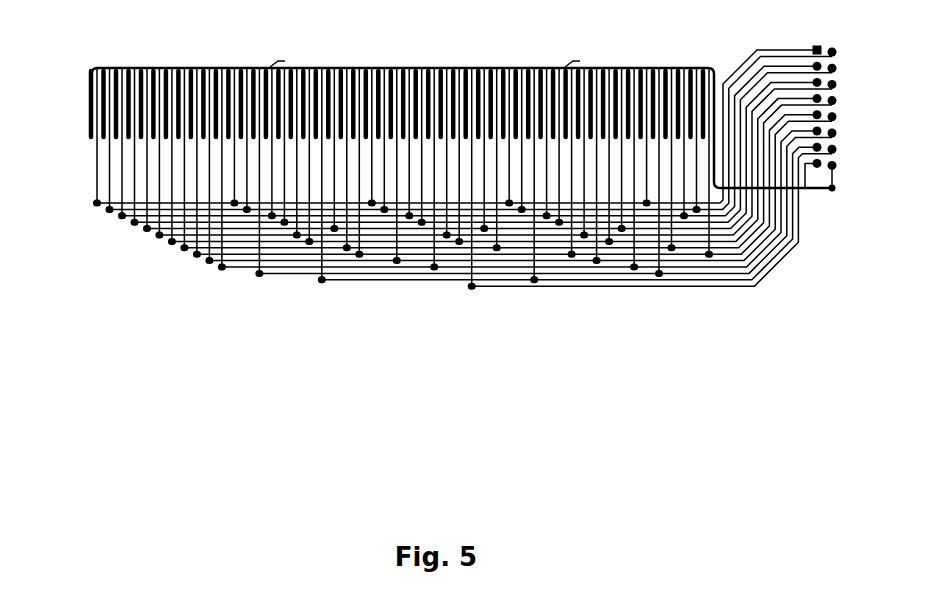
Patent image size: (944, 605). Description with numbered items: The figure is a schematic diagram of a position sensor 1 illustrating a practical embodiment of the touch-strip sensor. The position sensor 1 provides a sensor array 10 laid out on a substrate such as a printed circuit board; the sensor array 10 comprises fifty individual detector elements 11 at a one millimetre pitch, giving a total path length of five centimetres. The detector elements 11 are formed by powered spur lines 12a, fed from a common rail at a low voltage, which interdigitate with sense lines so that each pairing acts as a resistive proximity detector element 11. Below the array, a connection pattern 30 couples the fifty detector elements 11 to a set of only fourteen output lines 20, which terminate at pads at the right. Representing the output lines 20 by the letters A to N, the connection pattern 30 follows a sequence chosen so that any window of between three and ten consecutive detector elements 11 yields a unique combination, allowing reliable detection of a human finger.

The position sensor 1 is at (162, 281).
The sensor array 10 is at (470, 66).
The detector elements 11 is at (96, 153).
The spur lines 12a is at (836, 190).
The output lines 20 is at (843, 52).
The connection pattern 30 is at (283, 275).